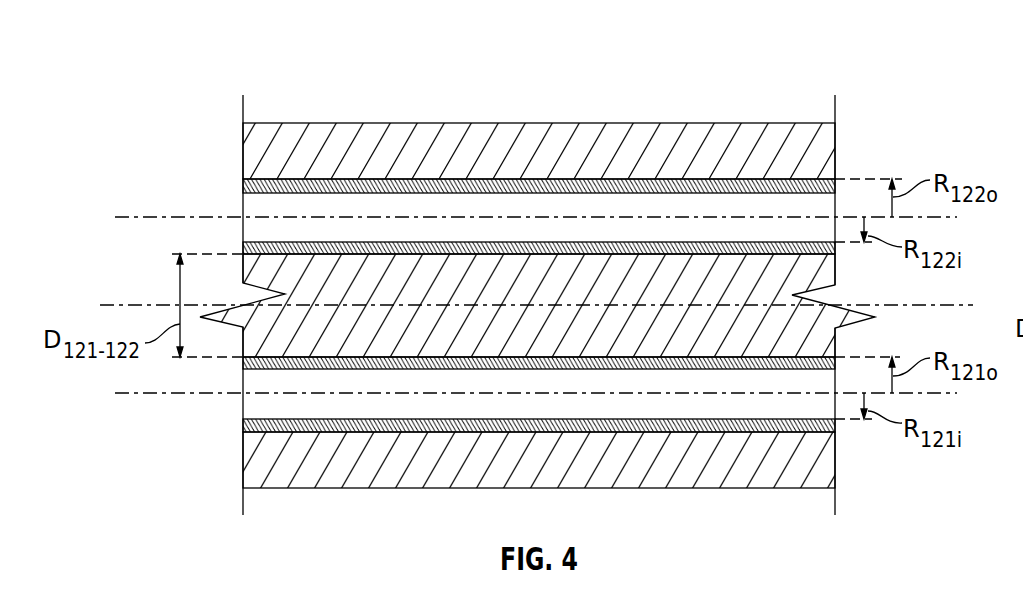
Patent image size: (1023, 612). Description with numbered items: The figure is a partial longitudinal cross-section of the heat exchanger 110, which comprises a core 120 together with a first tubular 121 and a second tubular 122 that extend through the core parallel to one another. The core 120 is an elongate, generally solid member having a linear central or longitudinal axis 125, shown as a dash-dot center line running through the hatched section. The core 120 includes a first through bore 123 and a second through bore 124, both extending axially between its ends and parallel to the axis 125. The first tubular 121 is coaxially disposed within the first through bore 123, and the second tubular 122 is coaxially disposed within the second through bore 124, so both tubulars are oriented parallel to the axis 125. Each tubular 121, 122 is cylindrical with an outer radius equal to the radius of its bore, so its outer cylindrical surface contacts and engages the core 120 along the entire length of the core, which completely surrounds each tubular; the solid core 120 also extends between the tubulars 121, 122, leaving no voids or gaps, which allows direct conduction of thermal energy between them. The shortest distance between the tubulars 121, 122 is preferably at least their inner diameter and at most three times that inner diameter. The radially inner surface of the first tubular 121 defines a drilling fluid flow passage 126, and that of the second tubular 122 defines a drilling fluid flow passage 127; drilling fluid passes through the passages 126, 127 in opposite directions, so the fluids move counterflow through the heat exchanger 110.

The heat exchanger 110 is at (249, 76).
The core 120 is at (318, 145).
The first tubular 121 is at (720, 430).
The second tubular 122 is at (425, 188).
The first through bore 123 is at (822, 432).
The second through bore 124 is at (820, 180).
The central or longitudinal axis 125 is at (953, 303).
The drilling fluid flow passage 126 is at (652, 405).
The drilling fluid flow passage 127 is at (550, 203).